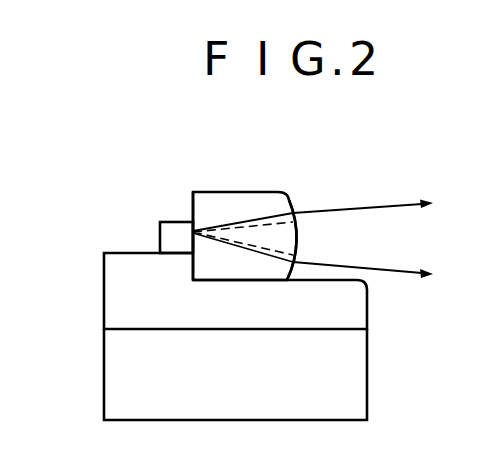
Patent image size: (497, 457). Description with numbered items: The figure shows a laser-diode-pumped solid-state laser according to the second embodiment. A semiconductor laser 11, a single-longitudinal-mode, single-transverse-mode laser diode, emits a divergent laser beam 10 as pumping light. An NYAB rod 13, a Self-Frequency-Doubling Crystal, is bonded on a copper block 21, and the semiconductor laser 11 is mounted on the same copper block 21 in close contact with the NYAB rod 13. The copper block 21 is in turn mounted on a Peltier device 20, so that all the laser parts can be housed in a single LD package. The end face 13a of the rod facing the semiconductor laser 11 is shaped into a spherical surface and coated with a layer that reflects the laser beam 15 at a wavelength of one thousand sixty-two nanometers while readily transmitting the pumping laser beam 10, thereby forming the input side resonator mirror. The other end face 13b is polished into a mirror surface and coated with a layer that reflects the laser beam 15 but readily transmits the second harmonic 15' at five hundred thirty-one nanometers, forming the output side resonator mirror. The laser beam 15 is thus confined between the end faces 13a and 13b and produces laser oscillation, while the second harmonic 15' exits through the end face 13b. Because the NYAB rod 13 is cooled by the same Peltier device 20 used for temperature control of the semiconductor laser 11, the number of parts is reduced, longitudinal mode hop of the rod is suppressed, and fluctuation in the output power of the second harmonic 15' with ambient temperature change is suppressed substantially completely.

The laser beam 10 is at (252, 249).
The semiconductor laser 11 is at (168, 222).
The NYAB rod 13 is at (243, 182).
The end face 13a is at (190, 208).
The other end face 13b is at (292, 202).
The laser beam 15 is at (254, 295).
The second harmonic 15' is at (367, 210).
The Peltier device 20 is at (122, 358).
The copper block 21 is at (117, 287).